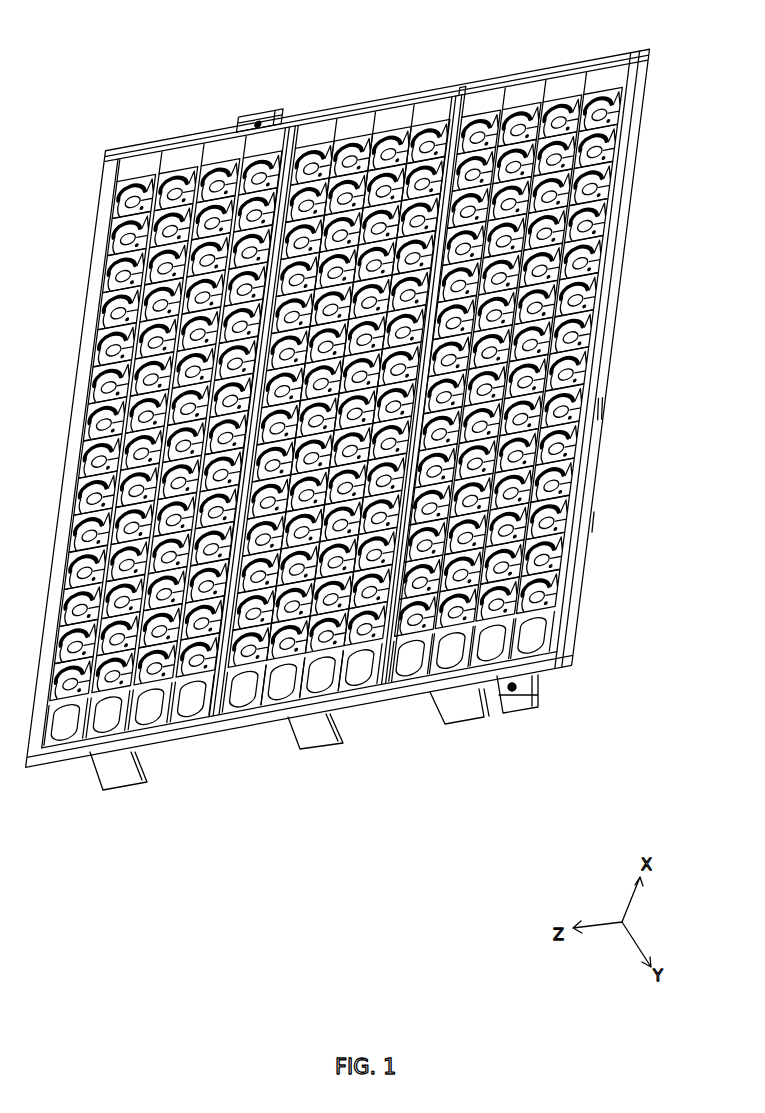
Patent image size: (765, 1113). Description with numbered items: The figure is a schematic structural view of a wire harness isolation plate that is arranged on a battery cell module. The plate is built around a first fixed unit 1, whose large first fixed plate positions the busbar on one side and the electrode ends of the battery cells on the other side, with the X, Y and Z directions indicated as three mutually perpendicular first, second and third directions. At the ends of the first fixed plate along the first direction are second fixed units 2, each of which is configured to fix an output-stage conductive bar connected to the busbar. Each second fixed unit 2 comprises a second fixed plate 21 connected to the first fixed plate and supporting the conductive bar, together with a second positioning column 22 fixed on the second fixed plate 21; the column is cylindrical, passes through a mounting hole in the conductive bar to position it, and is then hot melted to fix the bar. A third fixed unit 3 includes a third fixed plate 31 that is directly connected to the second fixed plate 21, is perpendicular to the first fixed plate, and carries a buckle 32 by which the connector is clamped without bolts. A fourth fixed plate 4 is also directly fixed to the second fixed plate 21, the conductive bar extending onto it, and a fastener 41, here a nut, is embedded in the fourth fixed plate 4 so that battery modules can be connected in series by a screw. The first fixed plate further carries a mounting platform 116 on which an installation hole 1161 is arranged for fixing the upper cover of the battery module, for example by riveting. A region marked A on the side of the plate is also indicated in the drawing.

The first fixed unit 1 is at (371, 428).
The second fixed unit 2 is at (334, 437).
The second fixed plate 21 is at (343, 112).
The second positioning column 22 is at (143, 157).
The third fixed unit 3 is at (265, 791).
The third fixed plate 31 is at (113, 772).
The buckle 32 is at (133, 787).
The fourth fixed plate 4 is at (389, 408).
The fastener 41 is at (540, 690).
The mounting platform 116 is at (626, 115).
The installation hole 1161 is at (277, 117).
The detail region A is at (592, 522).